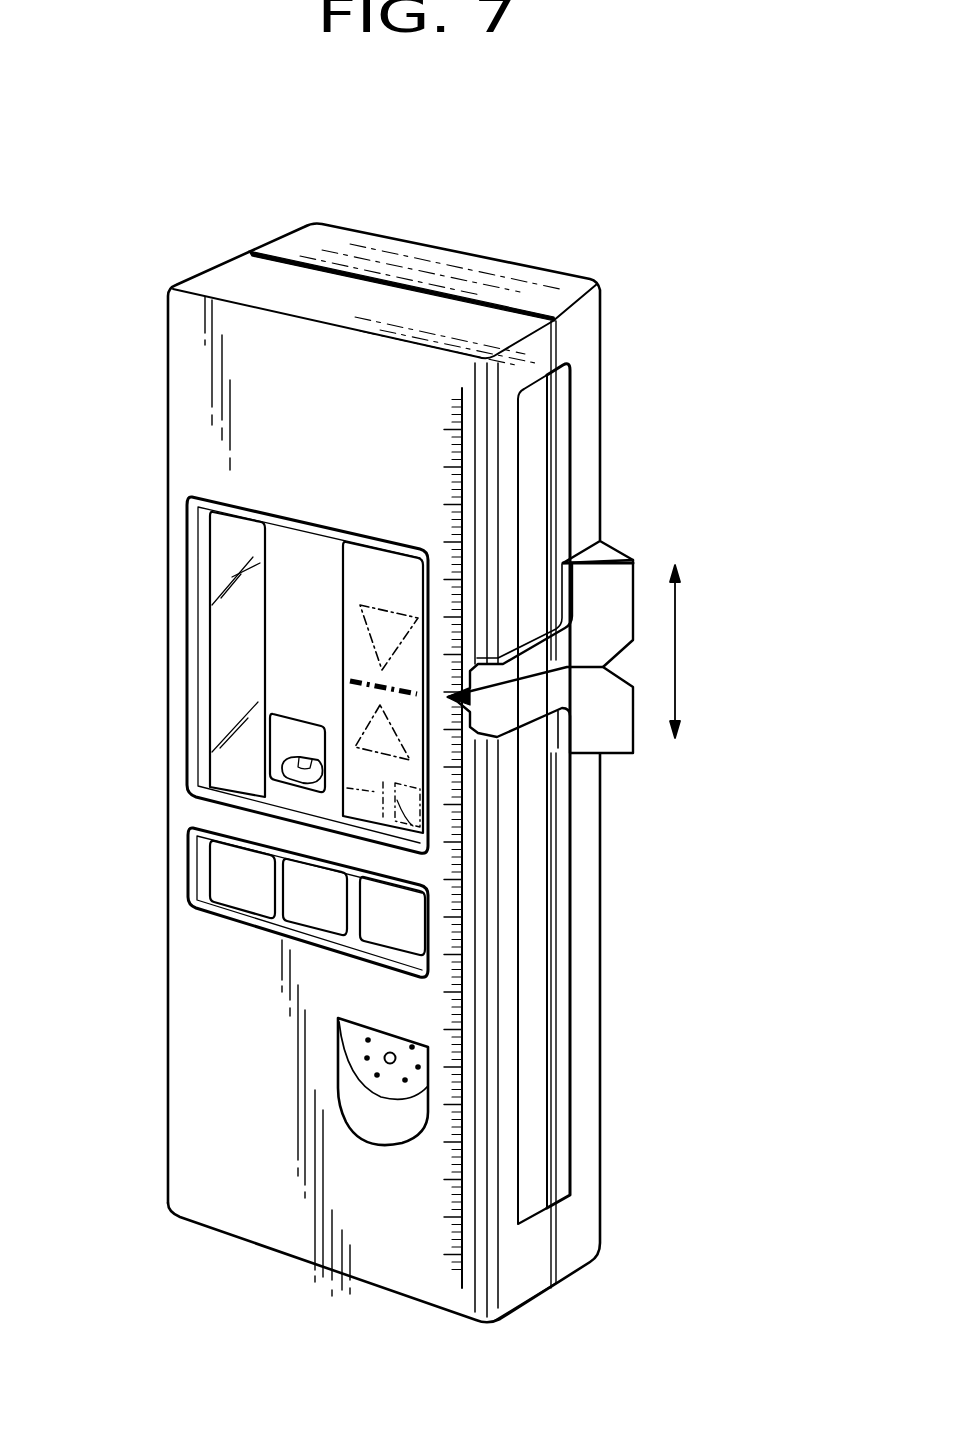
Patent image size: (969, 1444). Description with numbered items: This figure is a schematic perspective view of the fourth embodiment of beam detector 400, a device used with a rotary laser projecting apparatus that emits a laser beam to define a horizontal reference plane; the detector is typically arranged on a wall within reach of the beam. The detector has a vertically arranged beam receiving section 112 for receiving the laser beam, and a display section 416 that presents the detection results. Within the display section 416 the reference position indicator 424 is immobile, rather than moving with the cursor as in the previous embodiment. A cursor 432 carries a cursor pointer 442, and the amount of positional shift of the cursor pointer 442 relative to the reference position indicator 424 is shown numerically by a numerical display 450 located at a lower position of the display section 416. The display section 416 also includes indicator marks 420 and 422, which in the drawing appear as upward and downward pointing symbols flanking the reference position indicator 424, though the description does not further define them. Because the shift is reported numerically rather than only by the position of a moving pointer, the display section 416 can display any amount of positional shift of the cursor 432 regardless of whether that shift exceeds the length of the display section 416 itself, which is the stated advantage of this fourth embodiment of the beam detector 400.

The beam detector 400 is at (528, 260).
The beam receiving section 112 is at (233, 538).
The upward direction indicator 420 is at (388, 613).
The reference position indicator 424 is at (367, 678).
The downward direction indicator 422 is at (370, 723).
The display section 416 is at (388, 570).
The cursor 432 is at (623, 588).
The cursor pointer 442 is at (450, 698).
The numerical display 450 is at (440, 843).